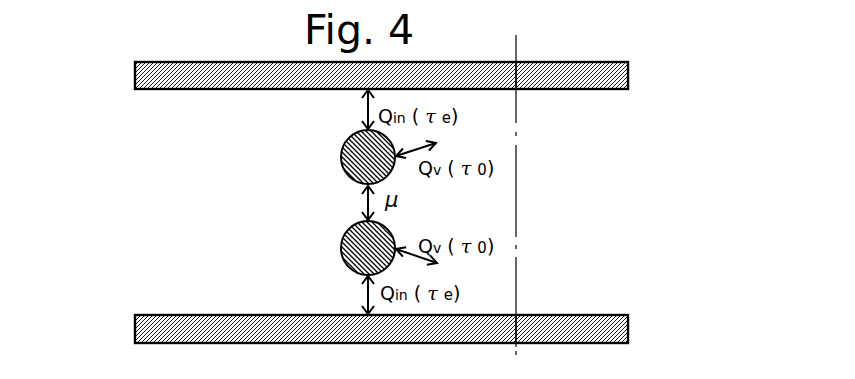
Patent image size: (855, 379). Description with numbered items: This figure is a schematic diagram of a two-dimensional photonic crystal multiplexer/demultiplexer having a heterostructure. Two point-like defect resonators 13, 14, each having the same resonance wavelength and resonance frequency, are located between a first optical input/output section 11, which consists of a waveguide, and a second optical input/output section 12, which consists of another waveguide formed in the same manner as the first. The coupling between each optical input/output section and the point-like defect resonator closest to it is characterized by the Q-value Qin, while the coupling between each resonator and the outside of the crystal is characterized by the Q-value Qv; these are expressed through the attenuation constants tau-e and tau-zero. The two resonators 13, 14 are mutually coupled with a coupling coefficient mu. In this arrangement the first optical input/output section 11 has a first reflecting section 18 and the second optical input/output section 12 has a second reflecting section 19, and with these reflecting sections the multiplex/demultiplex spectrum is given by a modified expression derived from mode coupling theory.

The first optical input/output section 11 is at (172, 90).
The second optical input/output section 12 is at (190, 328).
The point-like defect resonator 13 is at (366, 156).
The point-like defect resonator 14 is at (366, 248).
The first reflecting section 18 is at (516, 77).
The second reflecting section 19 is at (517, 327).